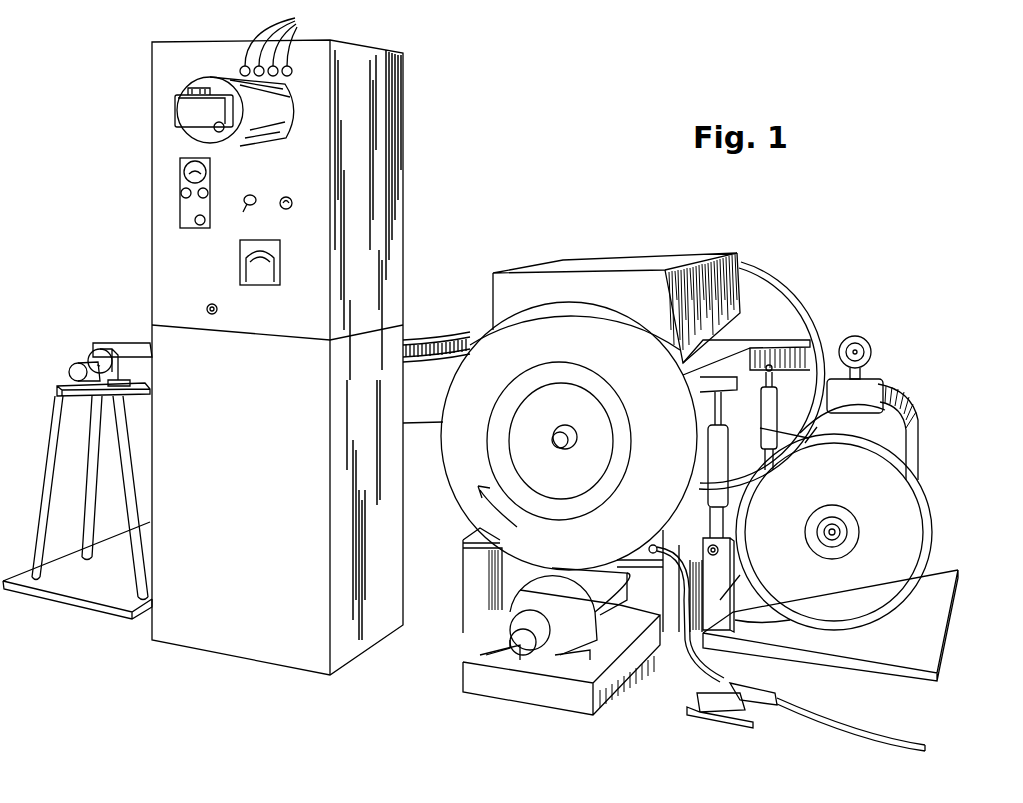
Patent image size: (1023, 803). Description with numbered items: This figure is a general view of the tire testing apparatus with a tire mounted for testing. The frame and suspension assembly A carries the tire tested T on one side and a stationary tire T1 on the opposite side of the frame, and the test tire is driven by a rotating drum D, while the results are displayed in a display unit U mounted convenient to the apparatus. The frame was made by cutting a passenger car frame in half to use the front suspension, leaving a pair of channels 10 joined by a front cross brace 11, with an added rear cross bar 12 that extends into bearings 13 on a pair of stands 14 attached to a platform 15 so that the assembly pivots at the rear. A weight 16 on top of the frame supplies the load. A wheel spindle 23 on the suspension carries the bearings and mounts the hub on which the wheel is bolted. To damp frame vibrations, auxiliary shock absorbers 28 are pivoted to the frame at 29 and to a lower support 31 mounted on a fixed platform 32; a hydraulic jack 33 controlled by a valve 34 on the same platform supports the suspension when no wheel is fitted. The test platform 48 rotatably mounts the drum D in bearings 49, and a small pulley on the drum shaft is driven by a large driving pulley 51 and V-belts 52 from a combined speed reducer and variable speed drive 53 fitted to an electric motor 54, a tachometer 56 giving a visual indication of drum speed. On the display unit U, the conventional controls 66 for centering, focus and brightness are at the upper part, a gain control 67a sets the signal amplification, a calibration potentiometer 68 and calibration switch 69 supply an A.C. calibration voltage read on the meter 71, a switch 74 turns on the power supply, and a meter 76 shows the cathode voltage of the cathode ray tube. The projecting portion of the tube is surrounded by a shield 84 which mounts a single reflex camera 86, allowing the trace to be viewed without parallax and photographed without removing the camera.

The channels 10 is at (445, 375).
The front cross brace 11 is at (735, 345).
The rear cross bar 12 is at (70, 376).
The bearings 13 is at (96, 356).
The stands 14 is at (78, 396).
The platform 15 is at (88, 598).
The weight 16 is at (670, 262).
The wheel spindle 23 is at (555, 445).
The auxiliary shock absorbers 28 is at (720, 462).
The pivot 29 is at (773, 371).
The lower support 31 is at (718, 572).
The fixed platform 32 is at (892, 657).
The hydraulic jack 33 is at (650, 546).
The valve 34 is at (765, 697).
The test platform 48 is at (545, 693).
The bearings 49 is at (518, 625).
The large driving pulley 51 is at (925, 498).
The V-belts 52 is at (772, 618).
The combined speed reducer and variable speed drive 53 is at (886, 437).
The electric motor 54 is at (905, 408).
The tachometer 56 is at (871, 351).
The controls 66 is at (284, 42).
The gain control 67a is at (182, 194).
The calibration potentiometer 68 is at (206, 190).
The calibration switch 69 is at (205, 220).
The meter 71 is at (195, 163).
The switch 74 is at (217, 312).
The meter 76 is at (265, 245).
The shield 84 is at (270, 112).
The camera 86 is at (186, 108).
The frame and suspension assembly A is at (468, 327).
The rotating drum D is at (500, 603).
The tire tested T is at (565, 292).
The stationary tire T1 is at (760, 262).
The display unit U is at (130, 157).